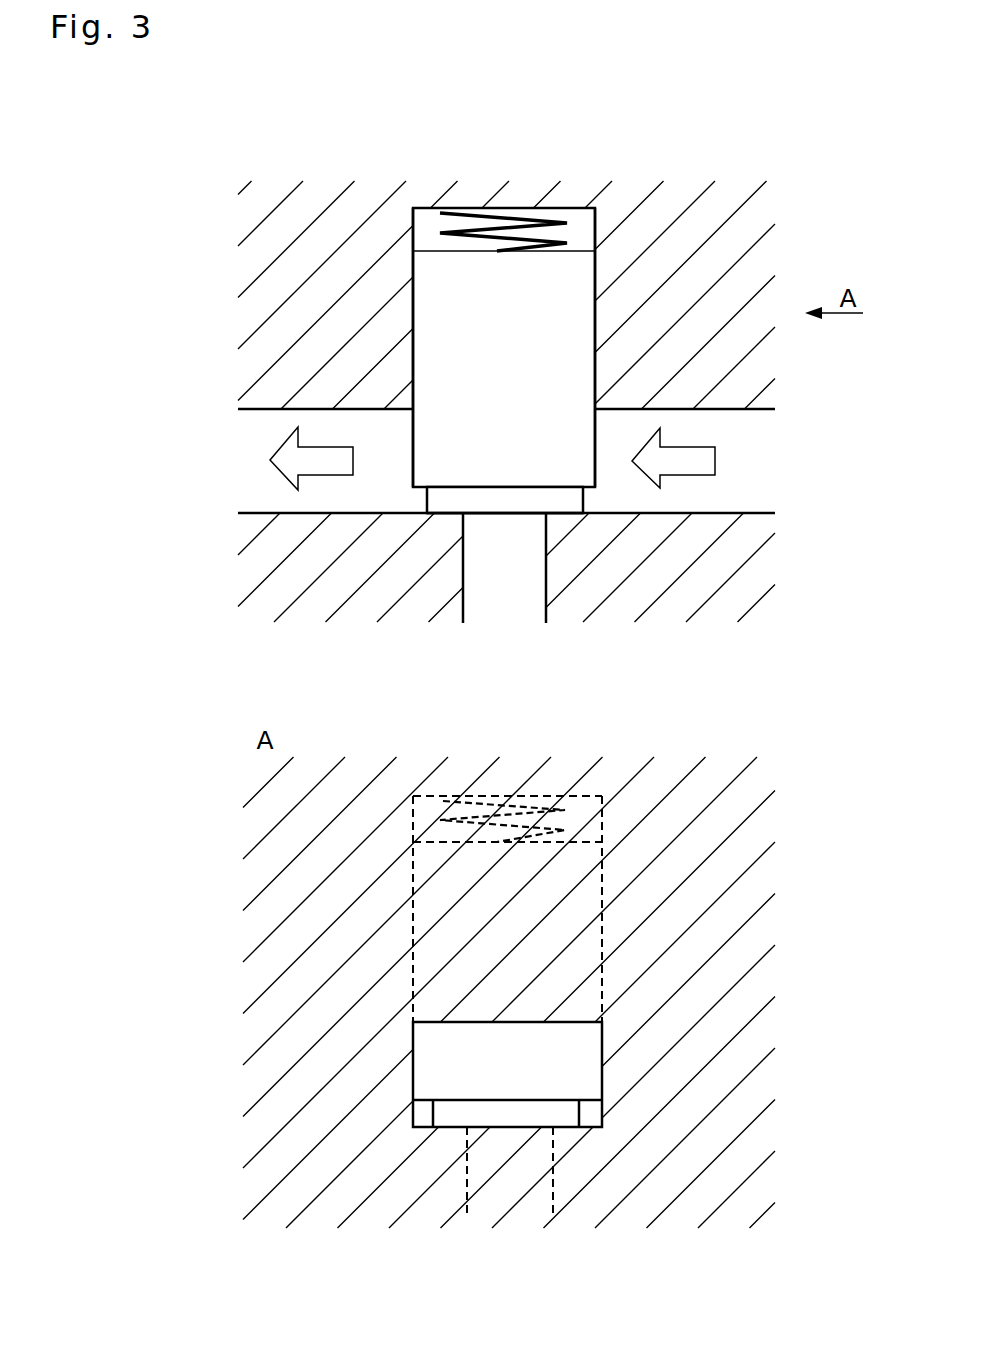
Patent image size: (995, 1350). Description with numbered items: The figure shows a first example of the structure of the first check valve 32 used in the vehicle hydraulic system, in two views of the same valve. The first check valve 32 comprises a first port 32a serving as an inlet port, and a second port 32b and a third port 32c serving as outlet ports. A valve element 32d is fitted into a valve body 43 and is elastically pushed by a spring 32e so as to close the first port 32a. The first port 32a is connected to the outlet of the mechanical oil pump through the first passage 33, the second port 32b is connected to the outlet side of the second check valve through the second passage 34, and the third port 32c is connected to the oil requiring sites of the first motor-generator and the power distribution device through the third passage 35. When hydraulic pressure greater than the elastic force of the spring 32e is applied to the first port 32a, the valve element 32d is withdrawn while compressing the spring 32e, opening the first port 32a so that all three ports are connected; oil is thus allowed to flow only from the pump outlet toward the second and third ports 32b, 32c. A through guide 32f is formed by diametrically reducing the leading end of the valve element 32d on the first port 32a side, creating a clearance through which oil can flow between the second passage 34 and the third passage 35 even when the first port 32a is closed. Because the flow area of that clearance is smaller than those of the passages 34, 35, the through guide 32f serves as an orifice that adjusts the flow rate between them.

The first check valve 32 is at (424, 680).
The first port 32a is at (508, 515).
The second port 32b is at (597, 458).
The third port 32c is at (410, 457).
The valve element 32d is at (440, 314).
The spring 32e is at (452, 212).
The through guide 32f is at (447, 502).
The first passage 33 is at (503, 607).
The second passage 34 is at (760, 454).
The third passage 35 is at (262, 490).
The valve body 43 is at (272, 322).